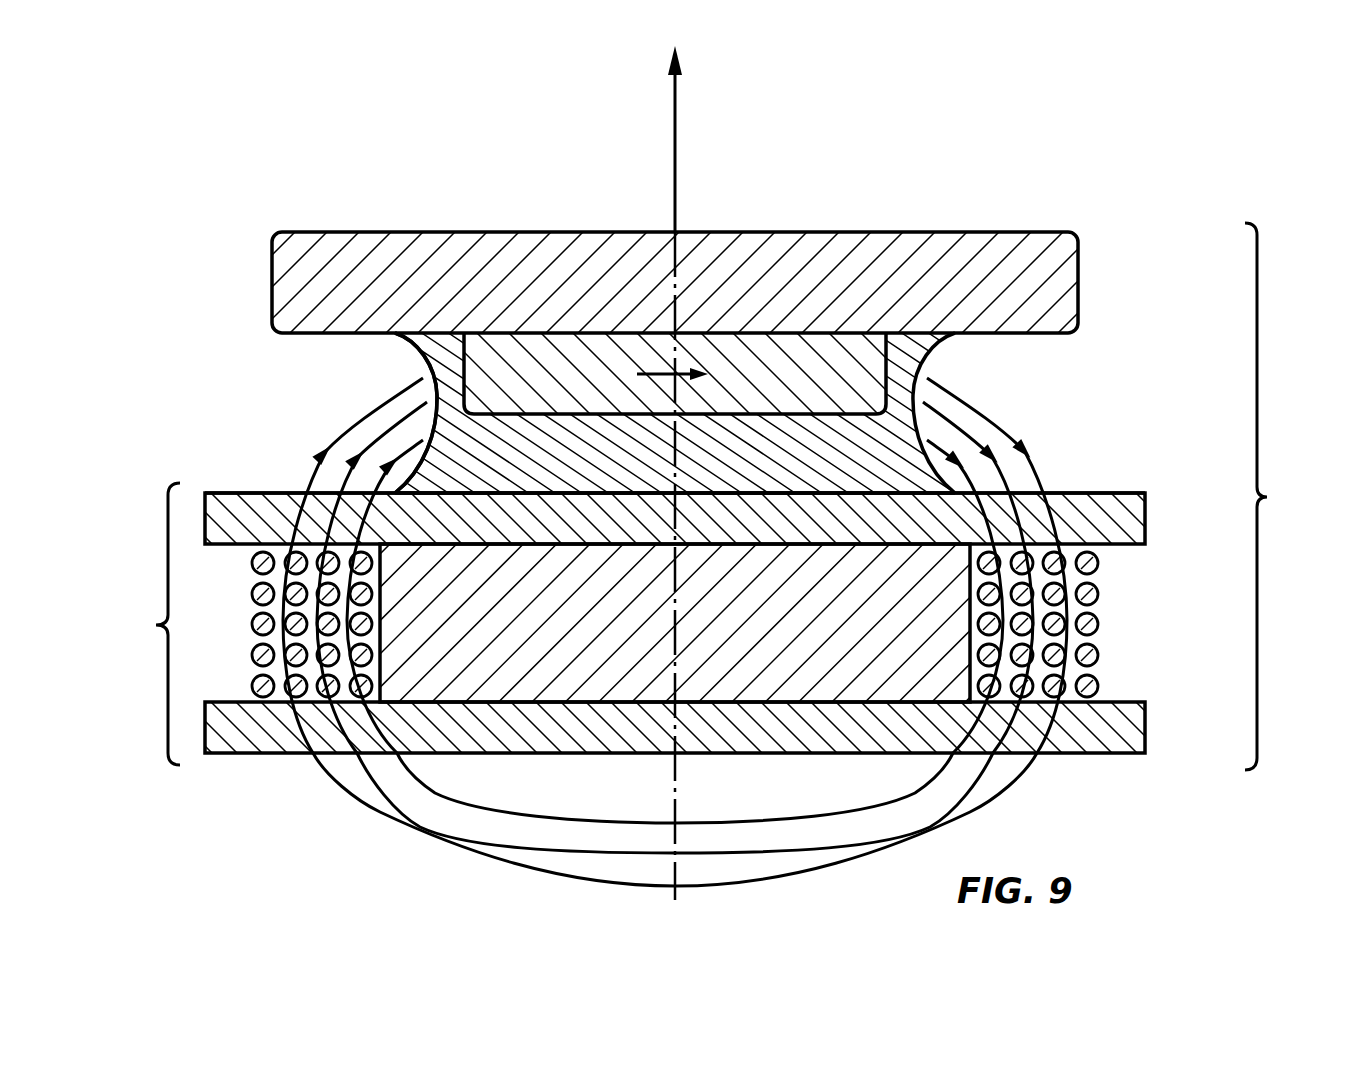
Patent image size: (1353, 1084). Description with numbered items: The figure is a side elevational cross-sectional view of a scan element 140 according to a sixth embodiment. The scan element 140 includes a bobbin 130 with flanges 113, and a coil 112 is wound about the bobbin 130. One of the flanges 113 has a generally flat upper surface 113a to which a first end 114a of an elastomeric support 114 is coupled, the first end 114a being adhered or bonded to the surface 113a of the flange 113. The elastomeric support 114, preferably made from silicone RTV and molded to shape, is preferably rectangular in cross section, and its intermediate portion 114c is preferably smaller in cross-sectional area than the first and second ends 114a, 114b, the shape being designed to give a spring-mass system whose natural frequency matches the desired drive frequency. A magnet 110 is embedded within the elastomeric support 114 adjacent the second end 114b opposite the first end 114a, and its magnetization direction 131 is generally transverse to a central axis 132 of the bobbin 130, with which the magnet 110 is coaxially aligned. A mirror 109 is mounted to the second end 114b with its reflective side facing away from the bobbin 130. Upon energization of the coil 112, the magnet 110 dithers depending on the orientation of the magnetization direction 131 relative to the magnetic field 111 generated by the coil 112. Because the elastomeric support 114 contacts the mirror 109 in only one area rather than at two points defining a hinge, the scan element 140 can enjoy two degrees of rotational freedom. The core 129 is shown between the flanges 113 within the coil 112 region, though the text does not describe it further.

The mirror 109 is at (965, 232).
The magnet 110 is at (800, 352).
The magnetic field 111 is at (995, 418).
The coil 112 is at (1100, 623).
The flanges 113 is at (1127, 522).
The upper surface 113a is at (250, 492).
The elastomeric support 114 is at (902, 373).
The first end 114a is at (788, 495).
The second end 114b is at (440, 333).
The intermediate portion 114c is at (423, 365).
The core 129 is at (556, 670).
The bobbin 130 is at (136, 624).
The magnetization direction 131 is at (658, 373).
The central axis 132 is at (677, 108).
The scan element 140 is at (1290, 496).